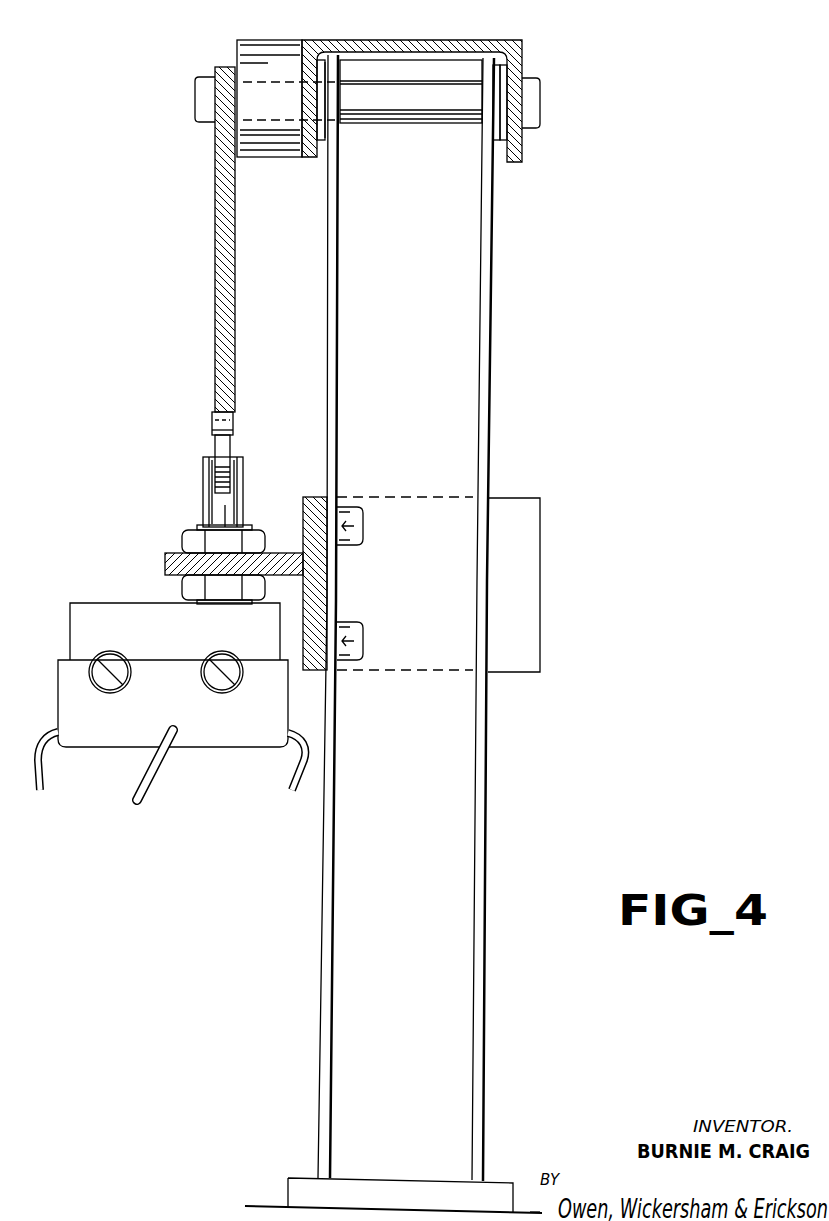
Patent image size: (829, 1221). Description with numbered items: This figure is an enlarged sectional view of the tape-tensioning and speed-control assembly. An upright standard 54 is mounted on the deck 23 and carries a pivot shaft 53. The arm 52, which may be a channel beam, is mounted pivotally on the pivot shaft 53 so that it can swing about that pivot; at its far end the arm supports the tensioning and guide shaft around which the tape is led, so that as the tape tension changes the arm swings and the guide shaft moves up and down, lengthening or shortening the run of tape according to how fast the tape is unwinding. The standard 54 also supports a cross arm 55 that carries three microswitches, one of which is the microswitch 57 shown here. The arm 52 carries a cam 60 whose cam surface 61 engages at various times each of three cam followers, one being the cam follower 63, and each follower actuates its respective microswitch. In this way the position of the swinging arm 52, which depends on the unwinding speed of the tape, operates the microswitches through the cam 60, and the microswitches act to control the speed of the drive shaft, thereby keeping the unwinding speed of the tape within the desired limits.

The deck 23 is at (268, 1207).
The arm 52 is at (398, 42).
The pivot shaft 53 is at (441, 118).
The standard 54 is at (485, 907).
The cross arm 55 is at (306, 500).
The microswitch 57 is at (102, 740).
The cam 60 is at (220, 337).
The cam surface 61 is at (230, 419).
The cam follower 63 is at (218, 453).